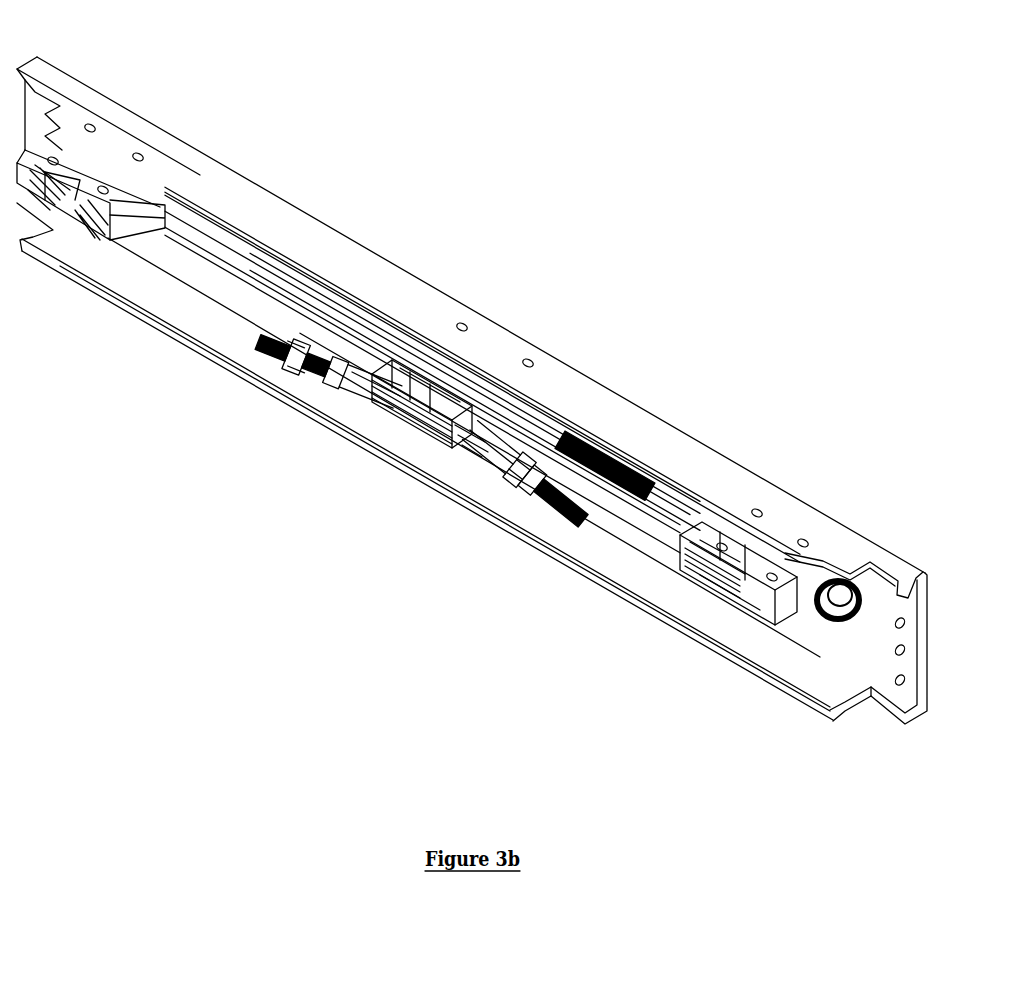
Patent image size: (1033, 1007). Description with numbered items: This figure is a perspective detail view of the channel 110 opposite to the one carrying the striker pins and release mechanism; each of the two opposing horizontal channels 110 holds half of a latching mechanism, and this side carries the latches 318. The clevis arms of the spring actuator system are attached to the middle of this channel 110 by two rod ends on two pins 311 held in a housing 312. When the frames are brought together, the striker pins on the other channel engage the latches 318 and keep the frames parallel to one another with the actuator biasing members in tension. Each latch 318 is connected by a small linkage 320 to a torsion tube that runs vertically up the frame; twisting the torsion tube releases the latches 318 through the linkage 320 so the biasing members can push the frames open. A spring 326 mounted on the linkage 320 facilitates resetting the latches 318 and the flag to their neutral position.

The channel 110 is at (285, 230).
The pins 311 is at (518, 445).
The housing 312 is at (437, 433).
The latch 318 is at (778, 567).
The linkage 320 is at (852, 578).
The spring 326 is at (603, 450).